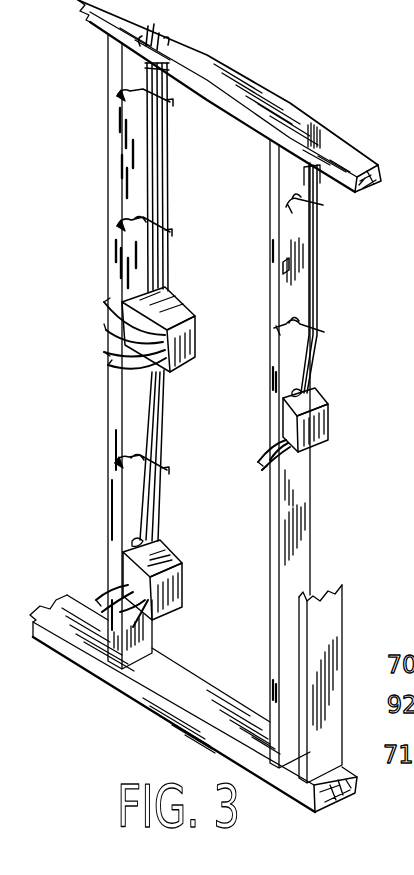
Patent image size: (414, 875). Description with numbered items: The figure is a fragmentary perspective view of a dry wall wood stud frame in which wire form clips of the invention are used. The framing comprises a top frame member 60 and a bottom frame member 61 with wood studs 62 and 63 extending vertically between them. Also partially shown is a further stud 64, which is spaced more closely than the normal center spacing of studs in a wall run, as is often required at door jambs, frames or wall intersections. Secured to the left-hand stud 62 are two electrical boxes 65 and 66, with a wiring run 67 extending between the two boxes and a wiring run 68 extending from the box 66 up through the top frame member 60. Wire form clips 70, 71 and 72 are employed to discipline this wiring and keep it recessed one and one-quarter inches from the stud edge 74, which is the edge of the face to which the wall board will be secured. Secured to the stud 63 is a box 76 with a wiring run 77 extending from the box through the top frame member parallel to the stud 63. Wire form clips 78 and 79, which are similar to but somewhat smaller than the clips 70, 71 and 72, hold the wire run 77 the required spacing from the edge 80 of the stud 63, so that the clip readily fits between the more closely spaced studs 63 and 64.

The top frame member 60 is at (228, 62).
The bottom frame member 61 is at (173, 665).
The wood stud 62 is at (110, 407).
The wood stud 63 is at (299, 492).
The further stud 64 is at (333, 620).
The electrical box 65 is at (182, 568).
The electrical box 66 is at (197, 340).
The wiring run 67 is at (152, 455).
The wiring run 68 is at (163, 143).
The wire form clip 70 is at (137, 110).
The wire form clip 71 is at (128, 242).
The wire form clip 72 is at (137, 475).
The stud edge 74 is at (127, 161).
The box 76 is at (320, 420).
The wiring run 77 is at (317, 237).
The wire form clip 78 is at (288, 207).
The wire form clip 79 is at (297, 337).
The edge 80 is at (289, 272).